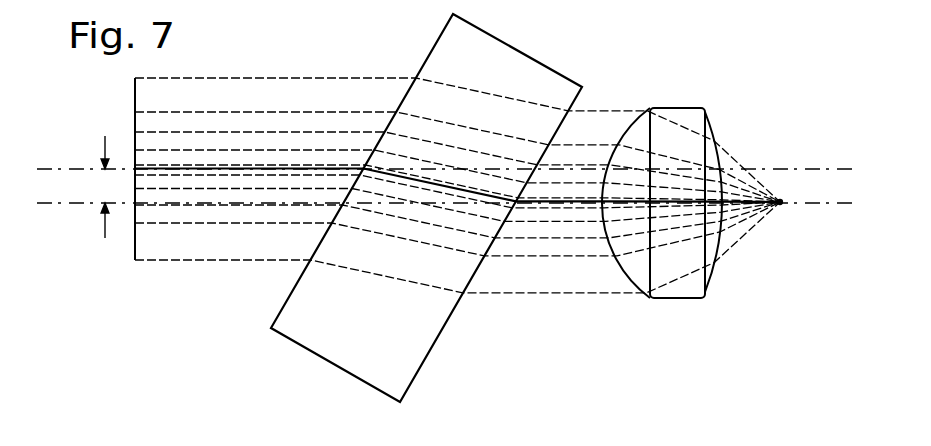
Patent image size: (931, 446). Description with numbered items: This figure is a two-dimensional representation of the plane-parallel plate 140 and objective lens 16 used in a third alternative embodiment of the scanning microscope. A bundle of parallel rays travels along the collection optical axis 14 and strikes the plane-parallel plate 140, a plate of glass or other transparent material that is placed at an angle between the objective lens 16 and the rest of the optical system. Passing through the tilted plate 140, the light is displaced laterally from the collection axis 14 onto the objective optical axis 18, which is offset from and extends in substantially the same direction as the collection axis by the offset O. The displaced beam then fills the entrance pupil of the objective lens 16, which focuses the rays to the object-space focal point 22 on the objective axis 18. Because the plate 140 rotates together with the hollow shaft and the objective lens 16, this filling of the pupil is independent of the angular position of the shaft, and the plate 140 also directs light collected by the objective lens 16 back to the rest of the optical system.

The collection optical axis 14 is at (818, 168).
The objective optical axis 18 is at (853, 205).
The plane-parallel plate 140 is at (419, 368).
The objective lens 16 is at (687, 299).
The object-space focal point 22 is at (782, 205).
The offset O is at (103, 147).